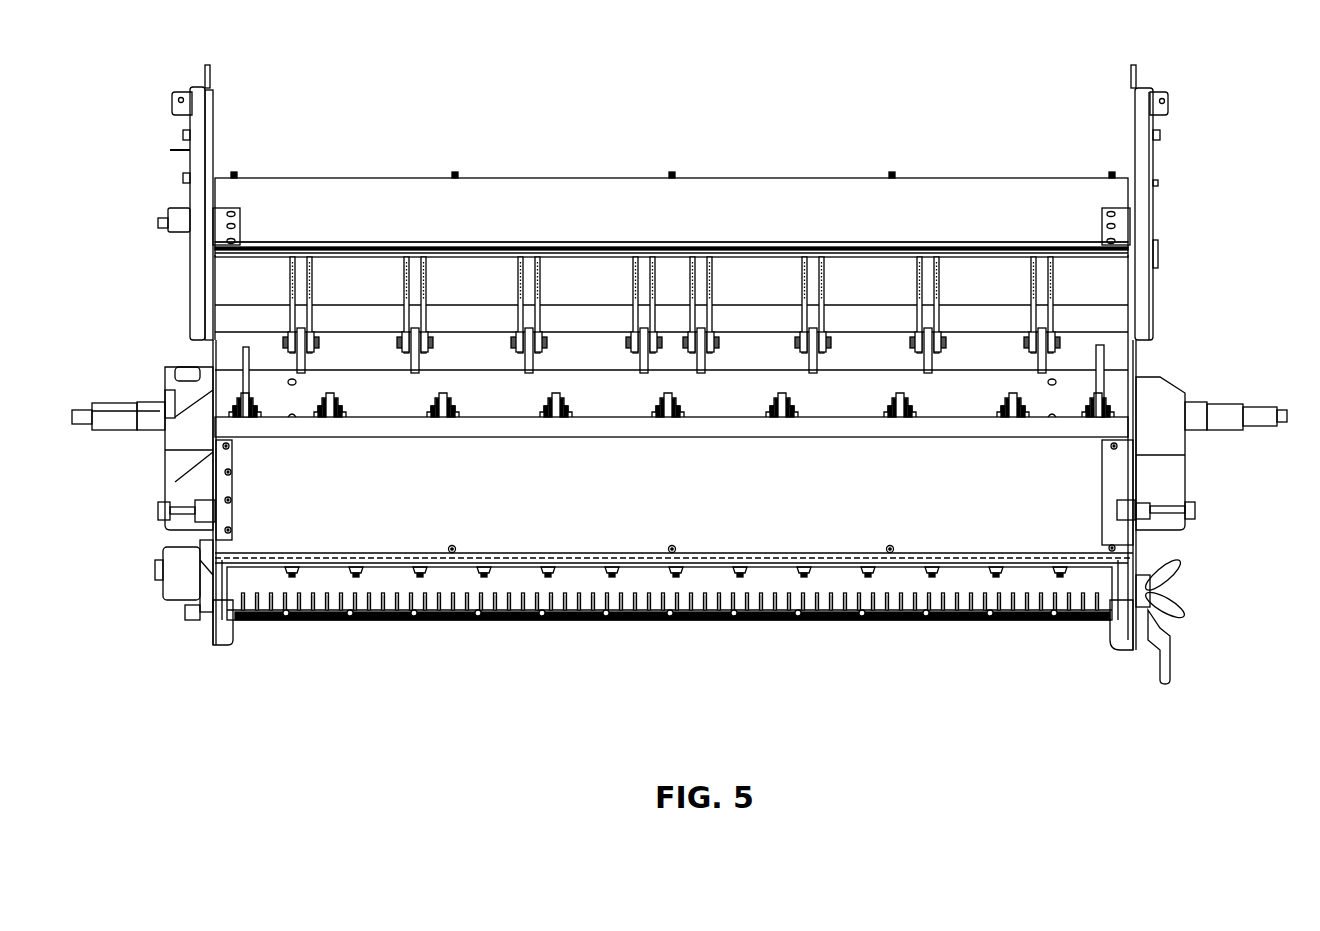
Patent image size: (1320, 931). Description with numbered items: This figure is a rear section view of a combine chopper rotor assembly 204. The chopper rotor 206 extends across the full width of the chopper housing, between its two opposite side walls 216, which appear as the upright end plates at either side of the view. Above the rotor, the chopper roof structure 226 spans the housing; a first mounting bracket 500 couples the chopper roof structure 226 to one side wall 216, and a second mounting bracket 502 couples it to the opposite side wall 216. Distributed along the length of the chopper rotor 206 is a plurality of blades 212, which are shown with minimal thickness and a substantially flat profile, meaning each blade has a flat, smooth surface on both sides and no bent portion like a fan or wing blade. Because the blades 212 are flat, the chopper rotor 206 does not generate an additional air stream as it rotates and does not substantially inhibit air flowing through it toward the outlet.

The chopper rotor assembly 204 is at (122, 274).
The chopper rotor 206 is at (982, 353).
The blades 212 is at (310, 272).
The side wall 216 is at (215, 213).
The chopper roof structure 226 is at (752, 202).
The first mounting bracket 500 is at (222, 222).
The second mounting bracket 502 is at (1128, 225).